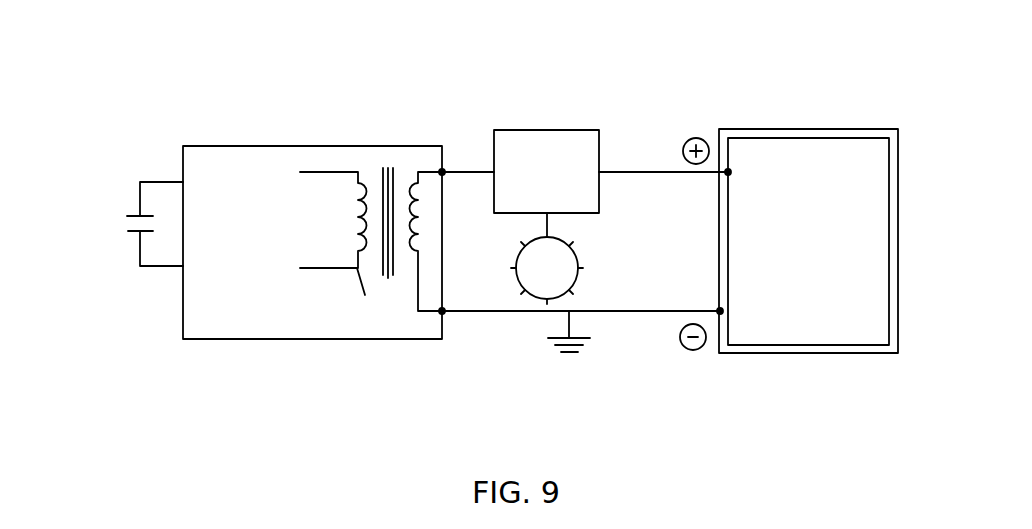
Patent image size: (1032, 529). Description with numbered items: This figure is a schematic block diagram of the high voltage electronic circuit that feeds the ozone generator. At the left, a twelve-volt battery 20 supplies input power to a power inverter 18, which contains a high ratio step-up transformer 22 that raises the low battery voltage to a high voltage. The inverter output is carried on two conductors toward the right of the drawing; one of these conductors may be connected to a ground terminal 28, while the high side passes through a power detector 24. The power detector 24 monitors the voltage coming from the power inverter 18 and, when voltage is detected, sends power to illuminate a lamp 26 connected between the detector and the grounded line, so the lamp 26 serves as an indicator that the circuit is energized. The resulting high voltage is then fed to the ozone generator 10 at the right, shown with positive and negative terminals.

The electrochemical cell / battery pack 10 is at (785, 160).
The power converter 18 is at (223, 175).
The power source / battery 20 is at (137, 232).
The transformer 22 is at (417, 278).
The rectifier / control circuit 24 is at (538, 150).
The current meter / sensor 26 is at (542, 278).
The ground 28 is at (577, 363).